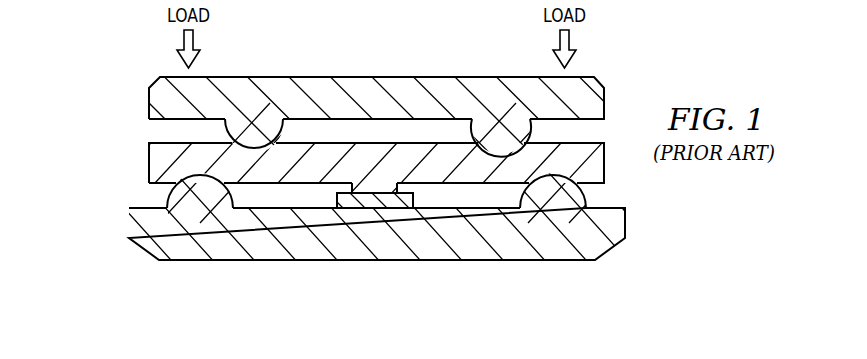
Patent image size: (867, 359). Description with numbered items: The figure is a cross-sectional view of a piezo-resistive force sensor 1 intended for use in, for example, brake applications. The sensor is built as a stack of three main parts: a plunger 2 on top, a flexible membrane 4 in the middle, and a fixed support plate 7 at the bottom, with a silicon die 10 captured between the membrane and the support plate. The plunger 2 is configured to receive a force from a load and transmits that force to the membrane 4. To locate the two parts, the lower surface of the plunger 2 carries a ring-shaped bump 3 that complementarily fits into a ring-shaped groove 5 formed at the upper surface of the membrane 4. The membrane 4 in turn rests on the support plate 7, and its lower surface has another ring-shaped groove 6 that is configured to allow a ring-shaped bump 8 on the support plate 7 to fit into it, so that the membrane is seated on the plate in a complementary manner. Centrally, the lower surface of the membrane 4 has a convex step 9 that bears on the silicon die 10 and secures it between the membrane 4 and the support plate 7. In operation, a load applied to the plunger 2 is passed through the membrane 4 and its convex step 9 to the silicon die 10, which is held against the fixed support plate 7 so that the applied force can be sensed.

The piezo-resistive force sensor 1 is at (76, 124).
The plunger 2 is at (149, 98).
The ring-shaped bump 3 is at (250, 138).
The flexible membrane 4 is at (149, 160).
The ring-shaped groove 5 is at (238, 157).
The ring-shaped groove 6 is at (187, 180).
The support plate 7 is at (625, 222).
The ring-shaped bump 8 is at (206, 195).
The convex step 9 is at (365, 190).
The silicon die 10 is at (402, 200).